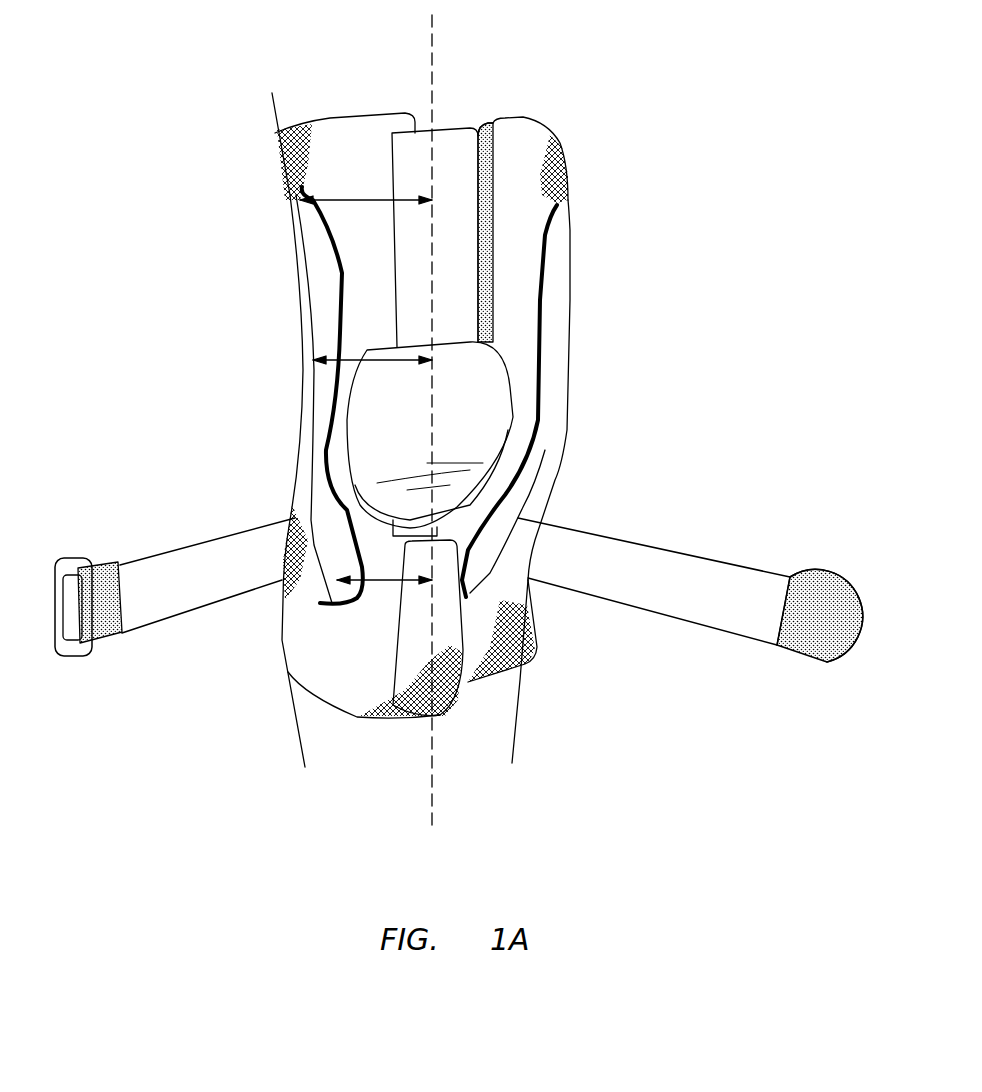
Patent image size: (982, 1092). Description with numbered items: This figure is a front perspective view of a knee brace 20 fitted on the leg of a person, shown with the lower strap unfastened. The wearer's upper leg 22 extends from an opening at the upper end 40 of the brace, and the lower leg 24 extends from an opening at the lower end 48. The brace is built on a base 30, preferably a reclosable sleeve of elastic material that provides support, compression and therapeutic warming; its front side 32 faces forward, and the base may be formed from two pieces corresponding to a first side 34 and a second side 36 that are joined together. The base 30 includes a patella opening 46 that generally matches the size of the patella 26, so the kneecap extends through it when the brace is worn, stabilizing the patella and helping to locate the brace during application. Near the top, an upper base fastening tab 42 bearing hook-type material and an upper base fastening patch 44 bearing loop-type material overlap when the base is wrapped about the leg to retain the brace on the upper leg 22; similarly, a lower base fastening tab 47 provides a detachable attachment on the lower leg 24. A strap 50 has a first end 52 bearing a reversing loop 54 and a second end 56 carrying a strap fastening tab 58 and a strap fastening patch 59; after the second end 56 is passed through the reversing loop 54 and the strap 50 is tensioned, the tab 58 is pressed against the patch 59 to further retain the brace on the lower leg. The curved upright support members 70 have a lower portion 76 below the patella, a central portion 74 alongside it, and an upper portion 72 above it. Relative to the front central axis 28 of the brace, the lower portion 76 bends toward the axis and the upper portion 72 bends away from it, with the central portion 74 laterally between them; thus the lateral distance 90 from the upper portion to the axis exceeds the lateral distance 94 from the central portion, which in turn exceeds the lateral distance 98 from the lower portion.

The knee brace 20 is at (172, 283).
The upper leg 22 is at (483, 70).
The lower leg 24 is at (473, 750).
The patella 26 is at (493, 402).
The front central axis 28 is at (432, 83).
The base 30 is at (353, 133).
The front side 32 is at (330, 133).
The first side 34 is at (317, 180).
The second side 36 is at (530, 197).
The upper end 40 is at (530, 133).
The upper base fastening tab 42 is at (480, 160).
The upper base fastening patch 44 is at (483, 178).
The patella opening 46 is at (343, 450).
The lower base fastening tab 47 is at (450, 652).
The lower end 48 is at (457, 680).
The strap 50 is at (173, 563).
The first end 52 is at (113, 563).
The reversing loop 54 is at (72, 563).
The second end 56 is at (810, 660).
The strap fastening tab 58 is at (827, 600).
The strap fastening patch 59 is at (733, 583).
The curved upright support members 70 is at (317, 318).
The upper portion 72 is at (317, 235).
The central portion 74 is at (317, 387).
The lower portion 76 is at (317, 553).
The lateral distance 90 is at (380, 200).
The lateral distance 94 is at (382, 360).
The lateral distance 98 is at (390, 580).